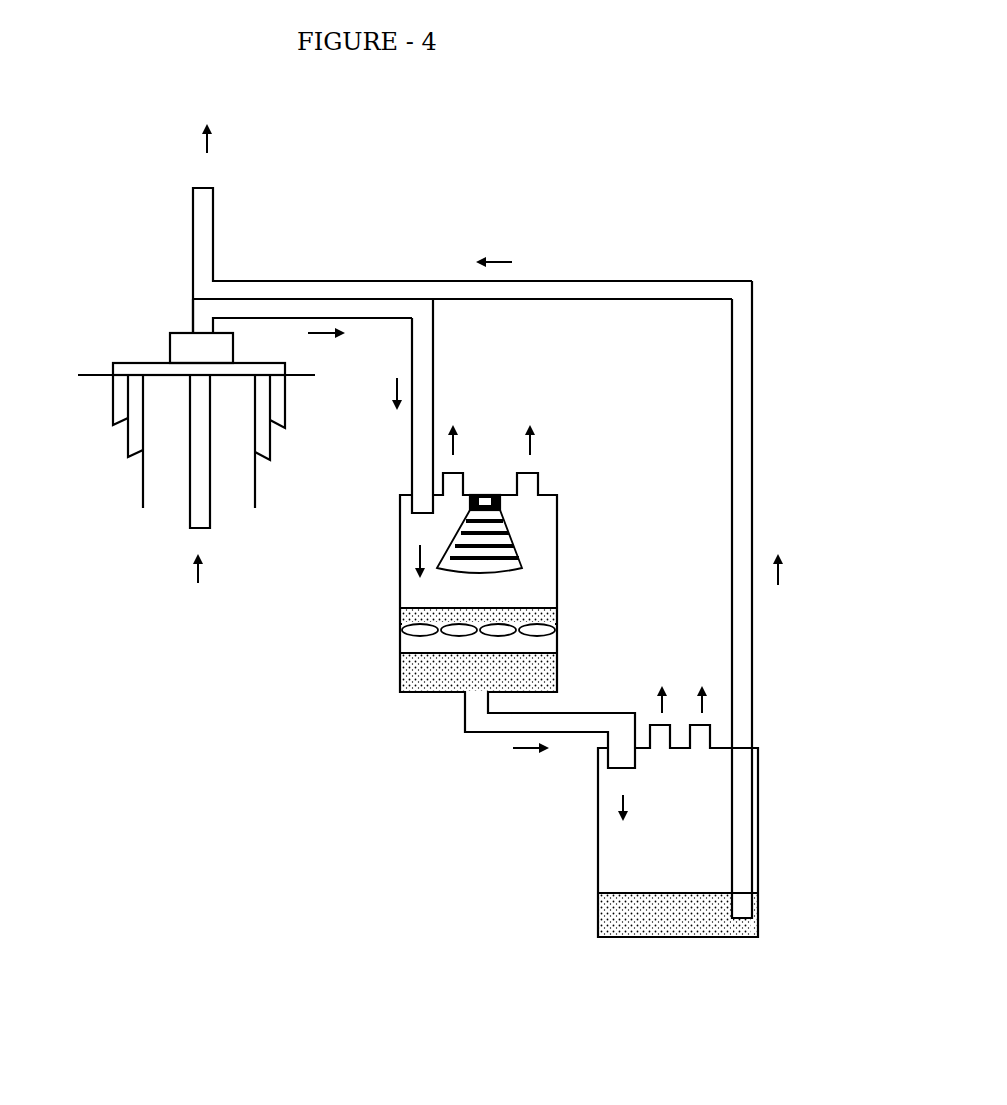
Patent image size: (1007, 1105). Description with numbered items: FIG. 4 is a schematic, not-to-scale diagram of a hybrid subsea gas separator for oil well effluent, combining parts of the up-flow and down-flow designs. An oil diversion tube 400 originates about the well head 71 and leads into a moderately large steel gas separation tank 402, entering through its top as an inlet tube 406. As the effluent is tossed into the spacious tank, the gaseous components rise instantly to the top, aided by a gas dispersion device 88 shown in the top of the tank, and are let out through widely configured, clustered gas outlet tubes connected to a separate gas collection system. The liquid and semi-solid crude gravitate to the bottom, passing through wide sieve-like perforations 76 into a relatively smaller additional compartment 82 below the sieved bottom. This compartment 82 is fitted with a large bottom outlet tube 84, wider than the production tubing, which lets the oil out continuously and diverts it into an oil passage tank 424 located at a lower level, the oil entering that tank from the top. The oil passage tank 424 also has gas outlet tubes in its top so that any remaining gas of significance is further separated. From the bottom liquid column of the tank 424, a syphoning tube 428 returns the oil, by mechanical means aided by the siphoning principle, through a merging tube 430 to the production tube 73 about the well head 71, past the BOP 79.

The well head 71 is at (140, 367).
The production tube 73 is at (200, 320).
The BOP 79 is at (183, 343).
The merging tube 430 is at (252, 290).
The oil diversion tube 400 is at (323, 310).
The inlet tube 406 is at (412, 468).
The gas separation tank 402 is at (400, 517).
The gas dispersion device 88 is at (507, 538).
The sieve-like perforations 76 is at (400, 622).
The additional compartment 82 is at (400, 690).
The bottom outlet tube 84 is at (595, 729).
The oil passage tank 424 is at (598, 830).
The syphoning tube 428 is at (753, 421).